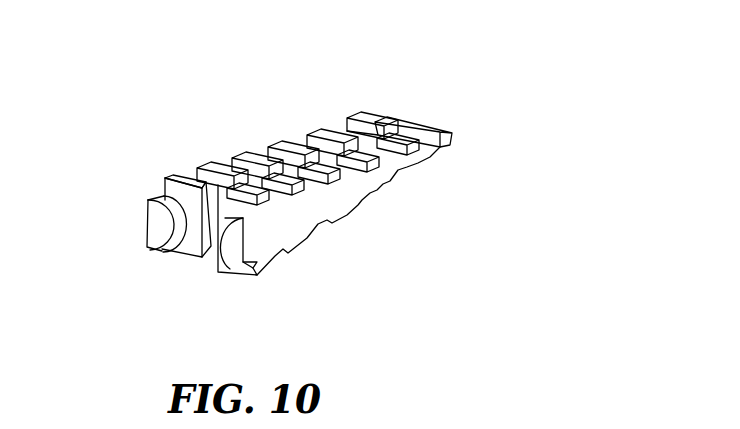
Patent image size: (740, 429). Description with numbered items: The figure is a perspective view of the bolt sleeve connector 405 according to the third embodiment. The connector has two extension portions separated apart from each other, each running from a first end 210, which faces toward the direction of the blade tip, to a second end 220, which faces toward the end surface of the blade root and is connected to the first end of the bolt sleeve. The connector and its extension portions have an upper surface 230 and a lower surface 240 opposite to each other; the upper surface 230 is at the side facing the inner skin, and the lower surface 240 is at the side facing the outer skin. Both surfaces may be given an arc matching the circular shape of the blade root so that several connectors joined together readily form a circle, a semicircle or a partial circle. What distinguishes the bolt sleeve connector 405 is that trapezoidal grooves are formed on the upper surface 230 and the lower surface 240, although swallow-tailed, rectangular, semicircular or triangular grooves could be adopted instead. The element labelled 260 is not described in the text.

The first end 210 is at (420, 133).
The second end 220 is at (182, 248).
The upper surface 230 is at (225, 165).
The lower surface 240 is at (347, 216).
The half-cylindrical projection 260 is at (153, 228).
The bolt sleeve connector 405 is at (295, 116).